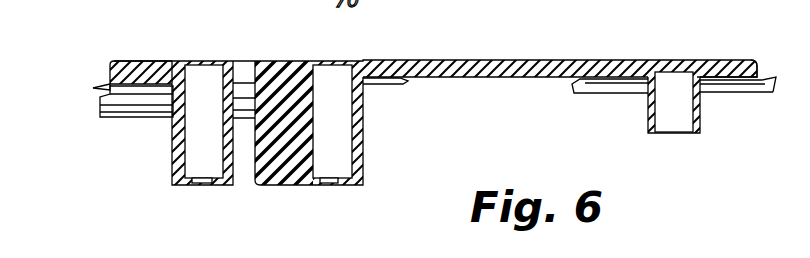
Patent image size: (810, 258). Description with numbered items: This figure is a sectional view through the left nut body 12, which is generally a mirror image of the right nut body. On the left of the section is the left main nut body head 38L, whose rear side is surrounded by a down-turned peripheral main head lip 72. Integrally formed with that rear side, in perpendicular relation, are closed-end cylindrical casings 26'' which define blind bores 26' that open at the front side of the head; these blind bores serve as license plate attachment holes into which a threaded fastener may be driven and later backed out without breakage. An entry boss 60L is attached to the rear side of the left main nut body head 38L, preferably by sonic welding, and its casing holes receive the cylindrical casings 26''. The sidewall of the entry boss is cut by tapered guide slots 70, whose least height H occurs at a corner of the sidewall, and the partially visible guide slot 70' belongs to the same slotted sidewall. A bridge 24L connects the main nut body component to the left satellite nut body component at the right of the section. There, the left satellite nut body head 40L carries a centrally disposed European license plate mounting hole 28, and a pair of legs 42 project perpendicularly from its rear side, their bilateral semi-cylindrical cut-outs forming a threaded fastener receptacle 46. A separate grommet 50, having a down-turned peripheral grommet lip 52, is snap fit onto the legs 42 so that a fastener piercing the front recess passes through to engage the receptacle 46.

The left nut body 12 is at (526, 57).
The bridge 24L is at (477, 59).
The blind bore 26' is at (268, 103).
The closed-end cylindrical casing 26'' is at (275, 138).
The European license plate mounting hole 28 is at (665, 57).
The left main nut body head 38L is at (123, 61).
The left satellite nut body head 40L is at (752, 78).
The legs 42 is at (627, 103).
The threaded fastener receptacle 46 is at (667, 127).
The grommet 50 is at (723, 92).
The peripheral grommet lip 52 is at (768, 90).
The entry boss 60L is at (140, 122).
The guide slot 70 is at (115, 119).
The arm (adjacent figure) 70' is at (217, 7).
The peripheral main head lip 72 is at (94, 87).
The least height H is at (148, 1).